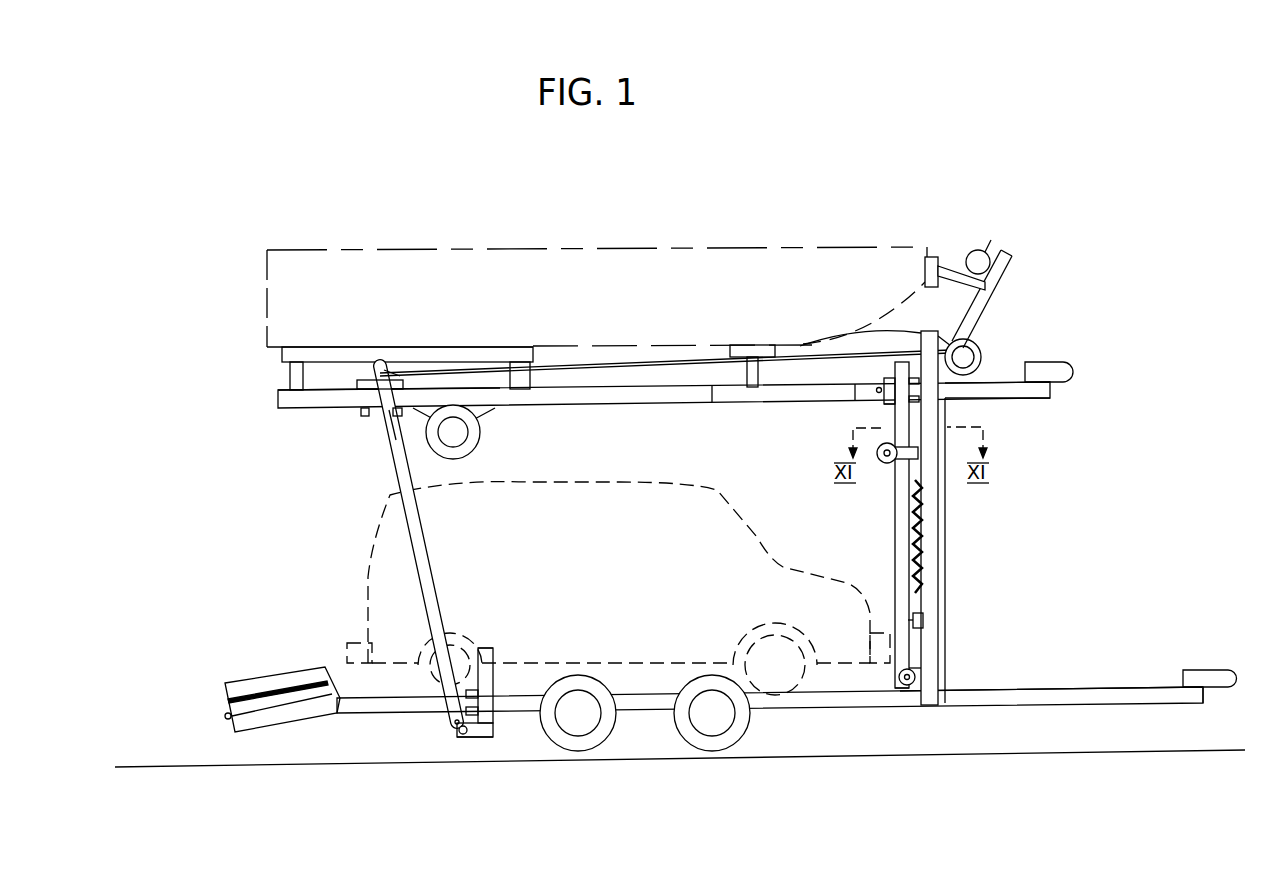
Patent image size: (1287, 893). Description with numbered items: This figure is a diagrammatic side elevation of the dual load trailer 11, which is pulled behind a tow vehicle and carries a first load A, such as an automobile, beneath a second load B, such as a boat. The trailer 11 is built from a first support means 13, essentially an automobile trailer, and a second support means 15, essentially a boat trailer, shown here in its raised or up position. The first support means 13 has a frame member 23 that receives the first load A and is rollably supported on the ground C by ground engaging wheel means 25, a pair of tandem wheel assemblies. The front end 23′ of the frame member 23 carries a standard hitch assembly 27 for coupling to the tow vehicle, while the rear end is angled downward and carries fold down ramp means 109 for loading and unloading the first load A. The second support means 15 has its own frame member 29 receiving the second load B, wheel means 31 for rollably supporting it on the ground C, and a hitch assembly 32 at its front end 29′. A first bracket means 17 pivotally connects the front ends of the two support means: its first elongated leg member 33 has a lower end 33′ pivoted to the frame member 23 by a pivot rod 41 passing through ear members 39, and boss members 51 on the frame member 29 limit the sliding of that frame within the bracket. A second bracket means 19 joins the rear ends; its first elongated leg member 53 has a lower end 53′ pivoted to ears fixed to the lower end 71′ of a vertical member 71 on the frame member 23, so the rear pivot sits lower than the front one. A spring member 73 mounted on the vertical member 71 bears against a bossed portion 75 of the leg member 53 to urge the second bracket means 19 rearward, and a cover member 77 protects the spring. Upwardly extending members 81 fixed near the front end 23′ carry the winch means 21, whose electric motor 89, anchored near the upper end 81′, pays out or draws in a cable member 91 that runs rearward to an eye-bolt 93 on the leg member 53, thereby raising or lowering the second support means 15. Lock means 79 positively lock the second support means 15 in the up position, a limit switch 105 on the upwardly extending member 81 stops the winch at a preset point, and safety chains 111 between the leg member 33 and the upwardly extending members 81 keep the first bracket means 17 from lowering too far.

The trailer 11 is at (1112, 190).
The first support means 13 is at (1137, 705).
The second support means 15 is at (1042, 406).
The first bracket means 17 is at (888, 410).
The second bracket means 19 is at (393, 466).
The winch means 21 is at (990, 337).
The frame member 23 is at (962, 700).
The front end 23′ is at (1208, 703).
The ground engaging wheel means 25 is at (668, 734).
The hitch assembly 27 is at (1237, 673).
The frame member 29 is at (698, 404).
The front end 29′ is at (995, 393).
The ground engaging wheel means 31 is at (483, 436).
The hitch assembly 32 is at (1078, 364).
The first elongated leg member 33 is at (895, 542).
The lower end 33′ is at (912, 672).
The ear members 39 is at (903, 686).
The pivot rod 41 is at (919, 692).
The boss members 51 is at (876, 392).
The first elongated leg member 53 is at (418, 548).
The lower end 53′ is at (452, 722).
The vertical members 71 is at (520, 740).
The lower end 71′ is at (498, 740).
The spring member 73 is at (468, 718).
The bossed portion 75 is at (461, 733).
The cover member 77 is at (470, 692).
The lock means 79 is at (877, 465).
The upwardly extending members 81 is at (936, 582).
The upper end 81′ is at (878, 326).
The electric motor 89 is at (984, 352).
The cable member 91 is at (648, 355).
The eye-bolt 93 is at (391, 364).
The limit switch 105 is at (926, 619).
The fold down ramp means 109 is at (287, 670).
The safety chains 111 is at (925, 545).
The first load A is at (760, 540).
The second load B is at (800, 264).
The ground C is at (1120, 749).